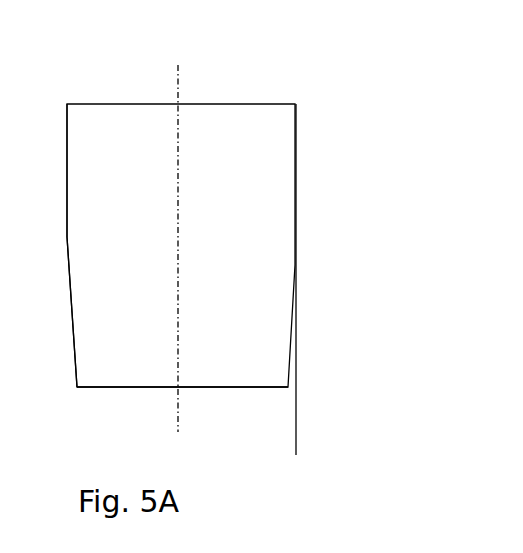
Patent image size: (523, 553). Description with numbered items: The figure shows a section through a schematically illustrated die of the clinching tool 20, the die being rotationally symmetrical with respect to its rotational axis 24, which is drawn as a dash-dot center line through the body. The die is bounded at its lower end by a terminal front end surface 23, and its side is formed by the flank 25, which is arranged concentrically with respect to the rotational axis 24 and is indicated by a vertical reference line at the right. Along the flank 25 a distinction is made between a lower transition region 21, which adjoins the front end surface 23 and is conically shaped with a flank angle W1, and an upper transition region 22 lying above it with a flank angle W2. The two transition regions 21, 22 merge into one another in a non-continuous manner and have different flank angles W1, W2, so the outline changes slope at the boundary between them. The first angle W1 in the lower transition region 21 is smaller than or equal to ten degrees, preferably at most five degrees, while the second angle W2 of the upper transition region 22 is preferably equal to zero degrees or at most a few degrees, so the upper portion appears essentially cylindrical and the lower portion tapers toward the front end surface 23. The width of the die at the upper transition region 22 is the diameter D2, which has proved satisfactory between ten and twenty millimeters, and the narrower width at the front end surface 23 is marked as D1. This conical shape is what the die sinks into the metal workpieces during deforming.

The clinching tool 20 is at (106, 43).
The lower transition region 21 is at (55, 250).
The upper transition region 22 is at (55, 105).
The front end surface 23 is at (157, 387).
The rotational axis 24 is at (179, 88).
The flank 25 is at (297, 273).
The bottom diameter D1 is at (283, 397).
The diameter D2 is at (290, 98).
The first flank angle W1 is at (257, 332).
The second flank angle W2 is at (267, 188).